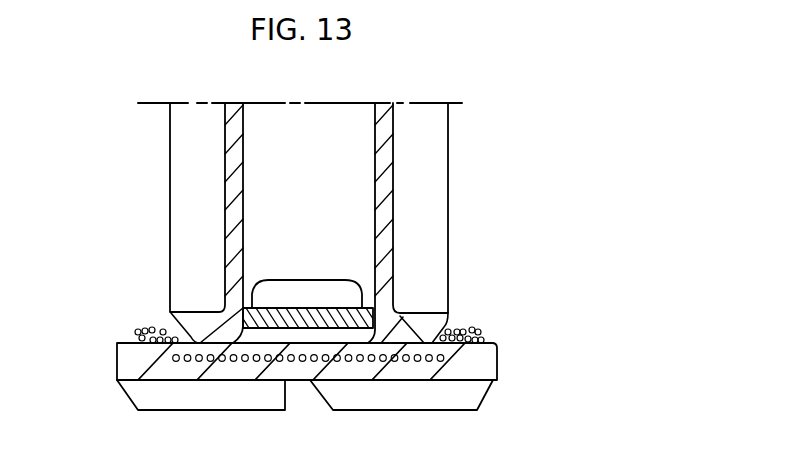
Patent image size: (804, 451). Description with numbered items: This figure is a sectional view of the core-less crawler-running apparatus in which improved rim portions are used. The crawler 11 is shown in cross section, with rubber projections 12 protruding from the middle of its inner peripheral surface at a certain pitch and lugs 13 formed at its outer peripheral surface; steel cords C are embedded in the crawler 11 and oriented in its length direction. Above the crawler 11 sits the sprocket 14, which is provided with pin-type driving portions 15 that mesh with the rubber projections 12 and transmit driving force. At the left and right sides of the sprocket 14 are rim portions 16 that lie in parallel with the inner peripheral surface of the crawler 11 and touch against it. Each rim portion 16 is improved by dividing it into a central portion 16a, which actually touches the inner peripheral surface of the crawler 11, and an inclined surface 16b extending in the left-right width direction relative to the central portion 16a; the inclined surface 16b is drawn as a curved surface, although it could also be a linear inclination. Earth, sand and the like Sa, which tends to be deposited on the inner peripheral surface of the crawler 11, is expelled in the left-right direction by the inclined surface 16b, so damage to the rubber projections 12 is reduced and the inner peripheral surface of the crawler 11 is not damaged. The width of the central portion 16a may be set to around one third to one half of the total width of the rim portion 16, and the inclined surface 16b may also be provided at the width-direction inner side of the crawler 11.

The crawler 11 is at (463, 375).
The rubber projections 12 is at (275, 293).
The lugs 13 is at (370, 400).
The sprocket 14 is at (330, 89).
The pin-type driving portions 15 is at (293, 320).
The rim portion 16 is at (170, 308).
The central portion 16a is at (408, 335).
The inclined surface 16b is at (450, 325).
The earth, sand and the like Sa is at (128, 329).
The steel cords C is at (267, 362).